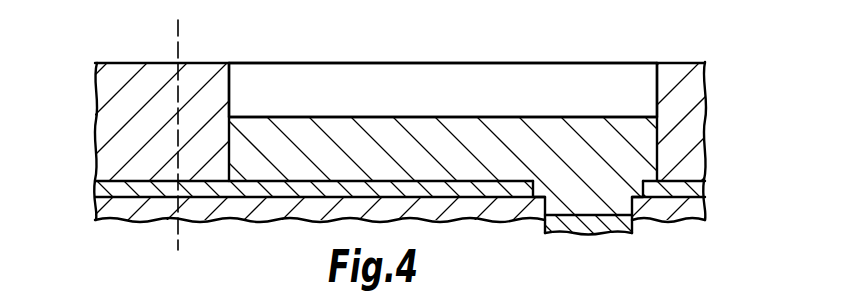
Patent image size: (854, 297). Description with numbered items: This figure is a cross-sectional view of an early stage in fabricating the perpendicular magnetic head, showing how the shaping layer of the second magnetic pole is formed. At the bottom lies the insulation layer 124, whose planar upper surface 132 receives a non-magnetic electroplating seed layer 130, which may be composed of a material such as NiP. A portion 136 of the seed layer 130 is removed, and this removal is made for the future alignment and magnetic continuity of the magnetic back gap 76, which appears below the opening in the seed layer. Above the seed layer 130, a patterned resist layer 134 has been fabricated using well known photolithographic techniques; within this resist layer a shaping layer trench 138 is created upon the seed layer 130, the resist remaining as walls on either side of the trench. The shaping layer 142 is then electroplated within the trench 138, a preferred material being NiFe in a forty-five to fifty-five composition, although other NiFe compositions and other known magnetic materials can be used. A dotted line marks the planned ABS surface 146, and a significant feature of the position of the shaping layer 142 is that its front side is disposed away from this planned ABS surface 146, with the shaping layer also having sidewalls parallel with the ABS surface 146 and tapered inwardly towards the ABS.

The magnetic back gap 76 is at (590, 227).
The insulation layer 124 is at (108, 207).
The non-magnetic electroplating seed layer 130 is at (100, 192).
The planar upper surface 132 is at (282, 190).
The patterned resist layer 134 is at (108, 128).
The portion of the seed layer 136 is at (614, 205).
The shaping layer trench 138 is at (328, 97).
The shaping layer 142 is at (412, 127).
The ABS surface 146 is at (178, 53).